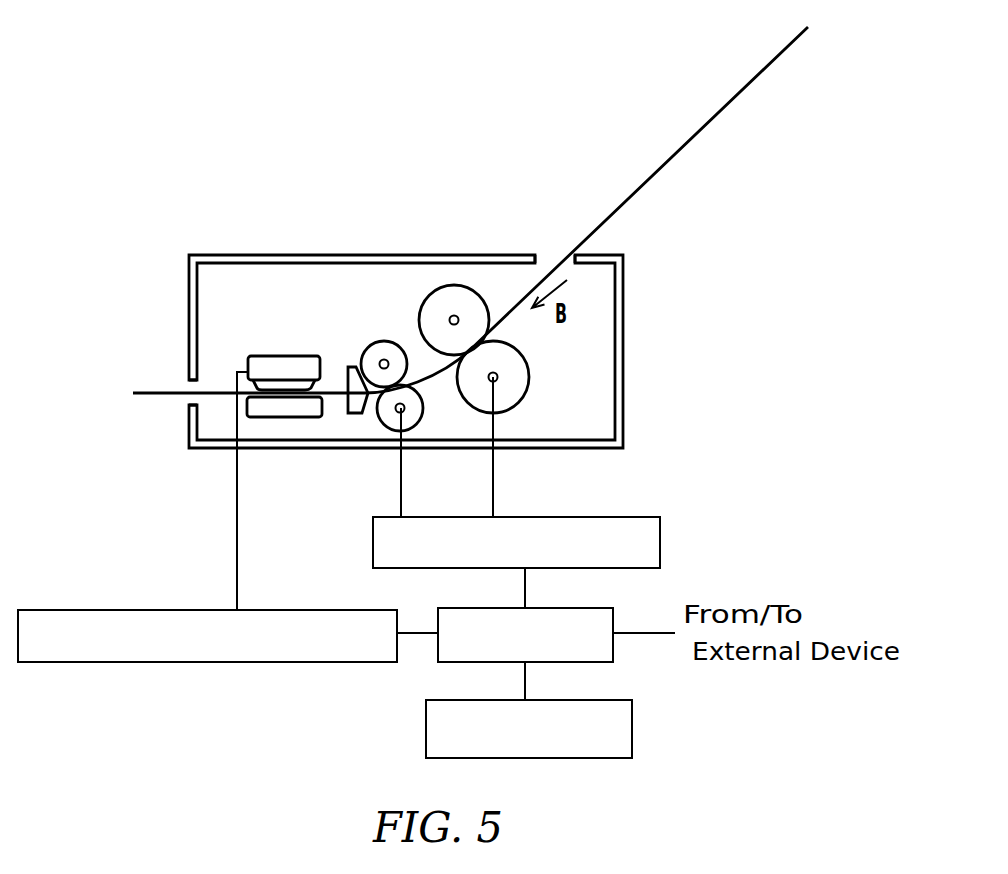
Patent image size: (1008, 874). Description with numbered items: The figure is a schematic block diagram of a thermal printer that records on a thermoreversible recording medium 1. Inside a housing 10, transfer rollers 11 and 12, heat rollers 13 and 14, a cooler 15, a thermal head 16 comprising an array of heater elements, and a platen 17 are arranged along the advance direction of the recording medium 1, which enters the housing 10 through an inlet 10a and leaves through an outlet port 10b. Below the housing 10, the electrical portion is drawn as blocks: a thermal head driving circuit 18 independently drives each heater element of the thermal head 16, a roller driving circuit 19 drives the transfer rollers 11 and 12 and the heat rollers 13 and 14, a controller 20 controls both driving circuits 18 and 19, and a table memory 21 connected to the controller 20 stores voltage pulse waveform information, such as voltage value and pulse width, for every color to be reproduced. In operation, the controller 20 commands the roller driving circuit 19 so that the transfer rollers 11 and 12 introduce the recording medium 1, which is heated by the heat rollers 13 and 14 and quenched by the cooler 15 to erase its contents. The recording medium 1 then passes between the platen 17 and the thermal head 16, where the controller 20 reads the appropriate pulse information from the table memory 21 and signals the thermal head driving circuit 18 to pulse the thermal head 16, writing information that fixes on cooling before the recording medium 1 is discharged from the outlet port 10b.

The thermoreversible recording medium 1 is at (642, 186).
The housing 10 is at (188, 305).
The tape inlet 10a is at (553, 268).
The outlet port 10b is at (188, 397).
The transfer roller 11 is at (437, 285).
The transfer roller 12 is at (523, 398).
The heat roller 13 is at (392, 342).
The heat roller 14 is at (414, 427).
The cooler 15 is at (355, 368).
The thermal head 16 is at (265, 356).
The platen 17 is at (318, 417).
The thermal head driving circuit 18 is at (197, 662).
The roller driving circuit 19 is at (638, 513).
The controller 20 is at (613, 650).
The table memory 21 is at (632, 733).